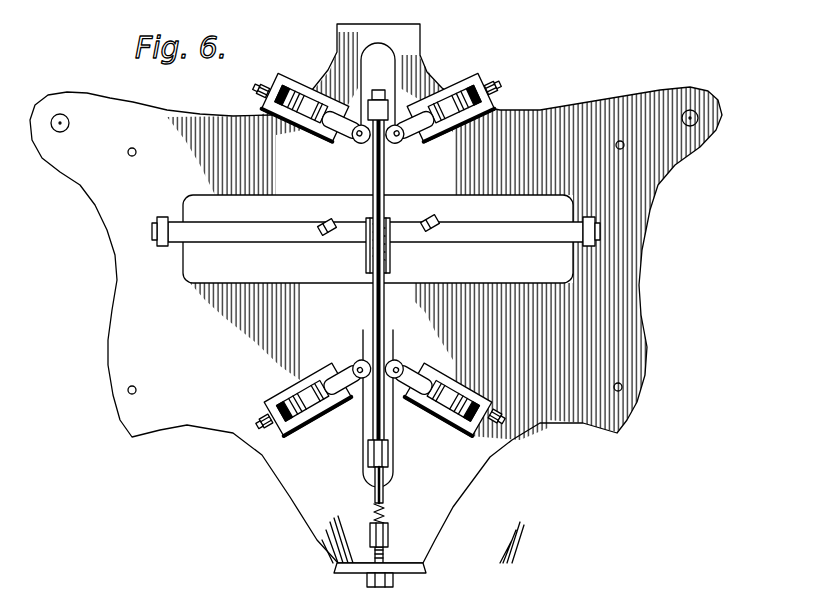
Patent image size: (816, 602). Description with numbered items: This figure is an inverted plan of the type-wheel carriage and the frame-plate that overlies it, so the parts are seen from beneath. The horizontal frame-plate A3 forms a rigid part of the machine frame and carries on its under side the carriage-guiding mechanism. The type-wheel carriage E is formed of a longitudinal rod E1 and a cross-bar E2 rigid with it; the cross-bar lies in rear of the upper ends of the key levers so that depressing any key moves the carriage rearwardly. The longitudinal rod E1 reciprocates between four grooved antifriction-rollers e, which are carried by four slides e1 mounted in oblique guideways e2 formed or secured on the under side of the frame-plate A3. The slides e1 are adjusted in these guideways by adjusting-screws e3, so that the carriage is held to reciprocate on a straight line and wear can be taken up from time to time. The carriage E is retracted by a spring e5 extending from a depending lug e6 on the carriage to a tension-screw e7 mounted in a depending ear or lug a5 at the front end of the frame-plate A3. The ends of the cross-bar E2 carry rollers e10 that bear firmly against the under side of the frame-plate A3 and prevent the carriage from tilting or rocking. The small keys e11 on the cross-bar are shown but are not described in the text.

The horizontal frame-plate A3 is at (376, 293).
The type-wheel carriage E is at (273, 244).
The longitudinal rod E1 is at (384, 313).
The cross-bar E2 is at (492, 242).
The grooved antifriction-rollers e is at (358, 147).
The slides e1 is at (317, 118).
The oblique guideways e2 is at (448, 130).
The adjusting-screws e3 is at (262, 92).
The spring e5 is at (388, 262).
The depending lug e6 is at (384, 224).
The tension-screw e7 is at (388, 553).
The rollers e10 is at (168, 228).
The keys e11 is at (332, 222).
The depending ear or lug a5 is at (403, 565).